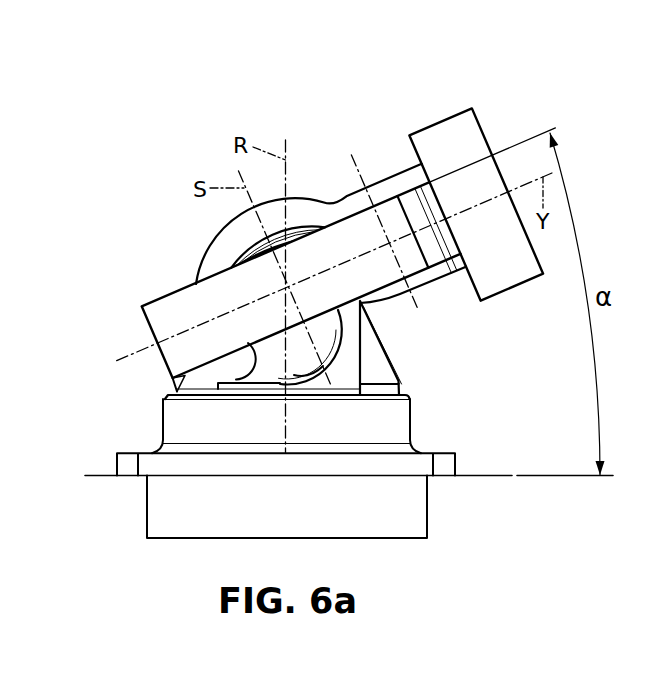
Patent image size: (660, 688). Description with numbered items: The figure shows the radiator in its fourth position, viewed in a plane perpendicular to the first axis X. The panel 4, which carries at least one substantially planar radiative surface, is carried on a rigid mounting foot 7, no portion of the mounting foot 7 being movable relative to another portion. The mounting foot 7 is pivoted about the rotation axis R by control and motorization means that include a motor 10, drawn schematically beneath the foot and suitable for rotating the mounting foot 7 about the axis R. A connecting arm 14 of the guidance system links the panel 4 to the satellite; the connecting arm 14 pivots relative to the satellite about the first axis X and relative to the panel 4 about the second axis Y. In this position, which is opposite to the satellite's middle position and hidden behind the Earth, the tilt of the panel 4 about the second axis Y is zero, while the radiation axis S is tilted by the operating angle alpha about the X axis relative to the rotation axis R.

The panel 4 is at (182, 302).
The connecting arm 14 is at (432, 103).
The mounting foot 7 is at (295, 374).
The motor 10 is at (303, 520).